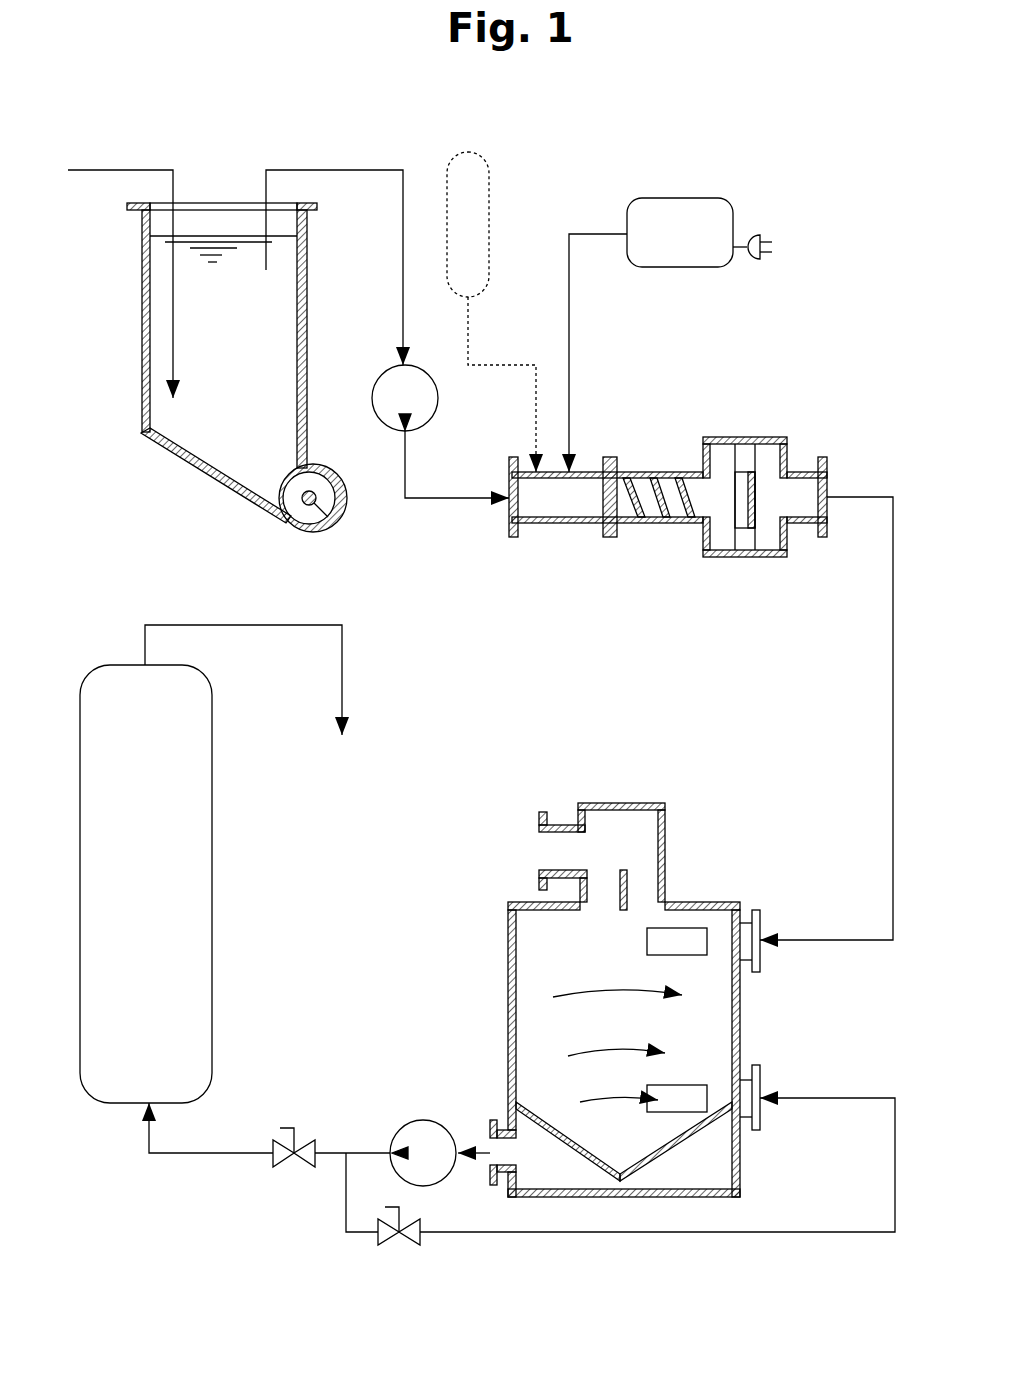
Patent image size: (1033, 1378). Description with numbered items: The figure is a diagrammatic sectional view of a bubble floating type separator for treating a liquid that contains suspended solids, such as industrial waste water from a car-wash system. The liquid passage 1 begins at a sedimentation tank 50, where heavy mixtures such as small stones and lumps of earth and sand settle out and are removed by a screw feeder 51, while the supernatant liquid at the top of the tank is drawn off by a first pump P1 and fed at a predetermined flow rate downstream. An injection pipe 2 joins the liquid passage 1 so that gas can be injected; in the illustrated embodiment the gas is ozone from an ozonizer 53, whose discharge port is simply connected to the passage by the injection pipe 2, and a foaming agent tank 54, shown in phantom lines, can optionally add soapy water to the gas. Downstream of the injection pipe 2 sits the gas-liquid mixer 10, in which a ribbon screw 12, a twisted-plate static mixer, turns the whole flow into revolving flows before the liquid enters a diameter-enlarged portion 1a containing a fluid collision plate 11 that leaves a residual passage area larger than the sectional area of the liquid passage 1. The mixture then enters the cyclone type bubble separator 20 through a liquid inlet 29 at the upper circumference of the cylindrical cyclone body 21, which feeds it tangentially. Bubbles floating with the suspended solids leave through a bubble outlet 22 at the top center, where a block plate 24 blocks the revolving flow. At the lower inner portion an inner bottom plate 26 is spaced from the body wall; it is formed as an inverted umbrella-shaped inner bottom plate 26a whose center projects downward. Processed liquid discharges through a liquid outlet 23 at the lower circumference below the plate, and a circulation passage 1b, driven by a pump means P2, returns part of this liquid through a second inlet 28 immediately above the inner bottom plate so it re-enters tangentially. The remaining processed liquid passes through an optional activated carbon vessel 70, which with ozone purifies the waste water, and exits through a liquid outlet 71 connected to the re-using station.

The liquid passage 1 is at (293, 168).
The diameter-enlarged portion 1a is at (779, 437).
The circulation passage 1b is at (548, 1232).
The injection pipe 2 is at (572, 410).
The gas-liquid mixer 10 is at (671, 470).
The fluid collision plate 11 is at (748, 527).
The ribbon screw 12 is at (653, 500).
The cyclone type bubble separator 20 is at (639, 987).
The cyclone body 21 is at (743, 1009).
The bubble outlet 22 is at (561, 850).
The liquid outlet 23 is at (512, 1158).
The block plate 24 is at (628, 890).
The inner bottom plate 26 is at (624, 1206).
The inner bottom plate 26a is at (613, 1181).
The second inlet 28 is at (757, 1120).
The liquid inlet 29 is at (763, 930).
The sedimentation tank 50 is at (148, 350).
The screw feeder 51 is at (292, 518).
The ozonizer 53 is at (676, 199).
The foaming agent tank 54 is at (487, 212).
The activated carbon vessel 70 is at (205, 830).
The liquid outlet 71 is at (145, 668).
The first pump P1 is at (422, 415).
The pump means P2 is at (425, 1140).